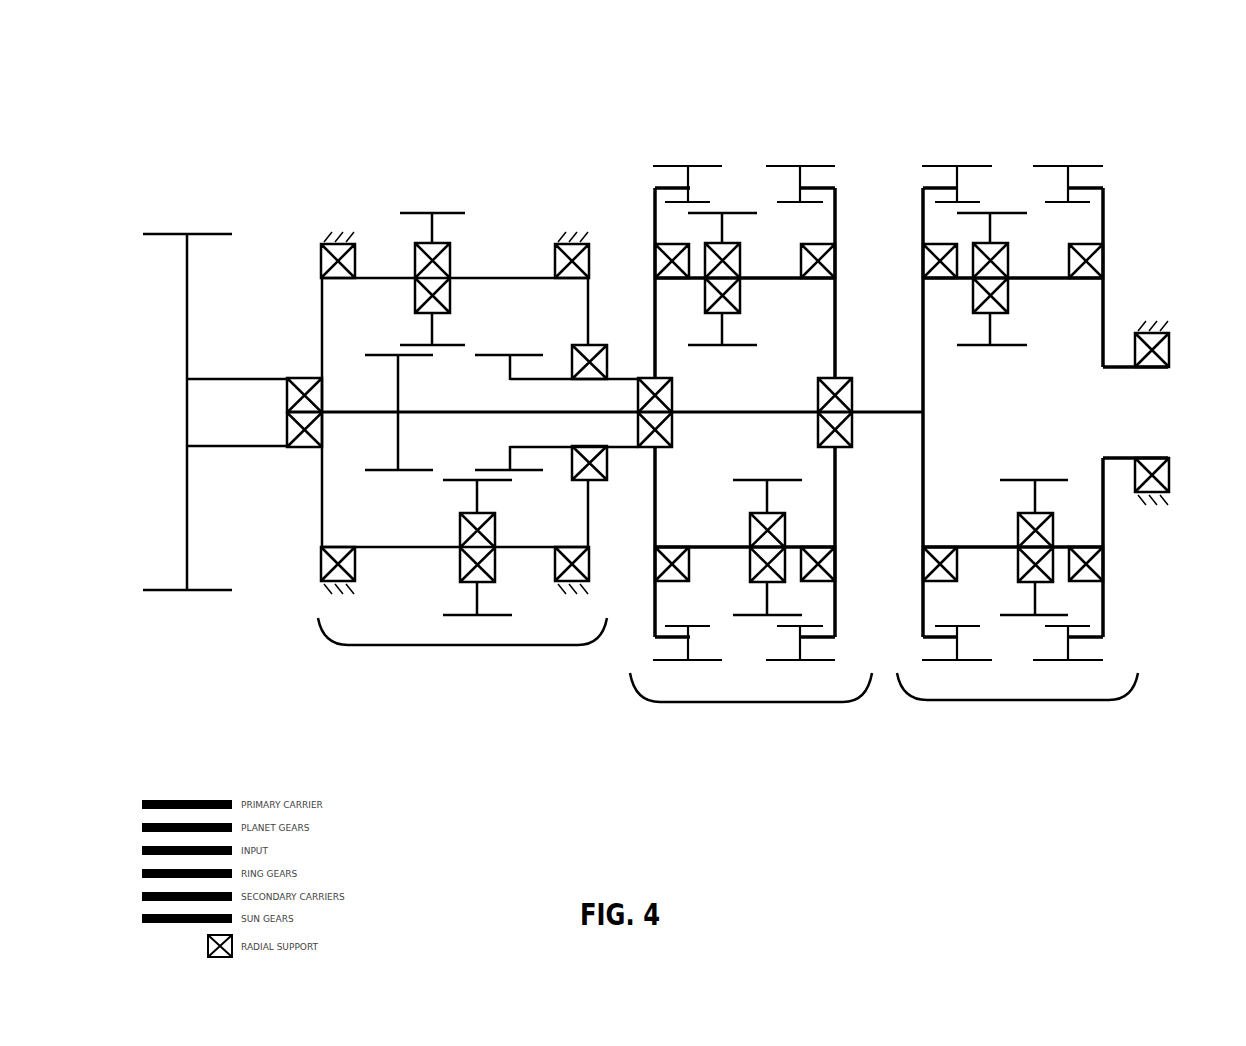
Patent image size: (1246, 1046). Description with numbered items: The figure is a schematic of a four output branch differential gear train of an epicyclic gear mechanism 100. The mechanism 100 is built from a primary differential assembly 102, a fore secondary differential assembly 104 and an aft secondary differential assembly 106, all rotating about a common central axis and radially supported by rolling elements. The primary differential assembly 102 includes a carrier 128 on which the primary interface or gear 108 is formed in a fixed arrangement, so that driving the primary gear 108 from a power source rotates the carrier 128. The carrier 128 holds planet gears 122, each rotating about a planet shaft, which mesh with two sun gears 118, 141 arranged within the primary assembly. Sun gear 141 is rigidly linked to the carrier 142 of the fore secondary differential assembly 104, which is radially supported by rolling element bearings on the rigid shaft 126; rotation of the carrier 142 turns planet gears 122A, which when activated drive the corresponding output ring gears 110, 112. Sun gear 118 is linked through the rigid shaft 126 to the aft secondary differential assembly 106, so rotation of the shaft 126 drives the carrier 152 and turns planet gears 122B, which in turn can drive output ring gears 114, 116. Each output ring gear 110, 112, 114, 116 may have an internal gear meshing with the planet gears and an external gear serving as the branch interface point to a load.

The multi-branch epicyclic differential output mechanism 100 is at (231, 84).
The primary differential assembly 102 is at (463, 645).
The fore secondary differential assembly 104 is at (752, 702).
The aft secondary differential assembly 106 is at (1018, 700).
The primary interface or gear 108 is at (221, 227).
The output ring gear 110 is at (693, 159).
The output ring gear 112 is at (806, 159).
The output ring gear 114 is at (962, 159).
The output ring gear 116 is at (1071, 159).
The sun gear 118 is at (392, 345).
The planet gears 122 is at (424, 207).
The planet gears 122A is at (789, 473).
The planet gears 122B is at (1010, 352).
The shaft 126 is at (367, 402).
The carrier 128 is at (387, 267).
The sun gear 141 is at (535, 351).
The carrier 142 is at (652, 276).
The carrier 152 is at (1113, 295).